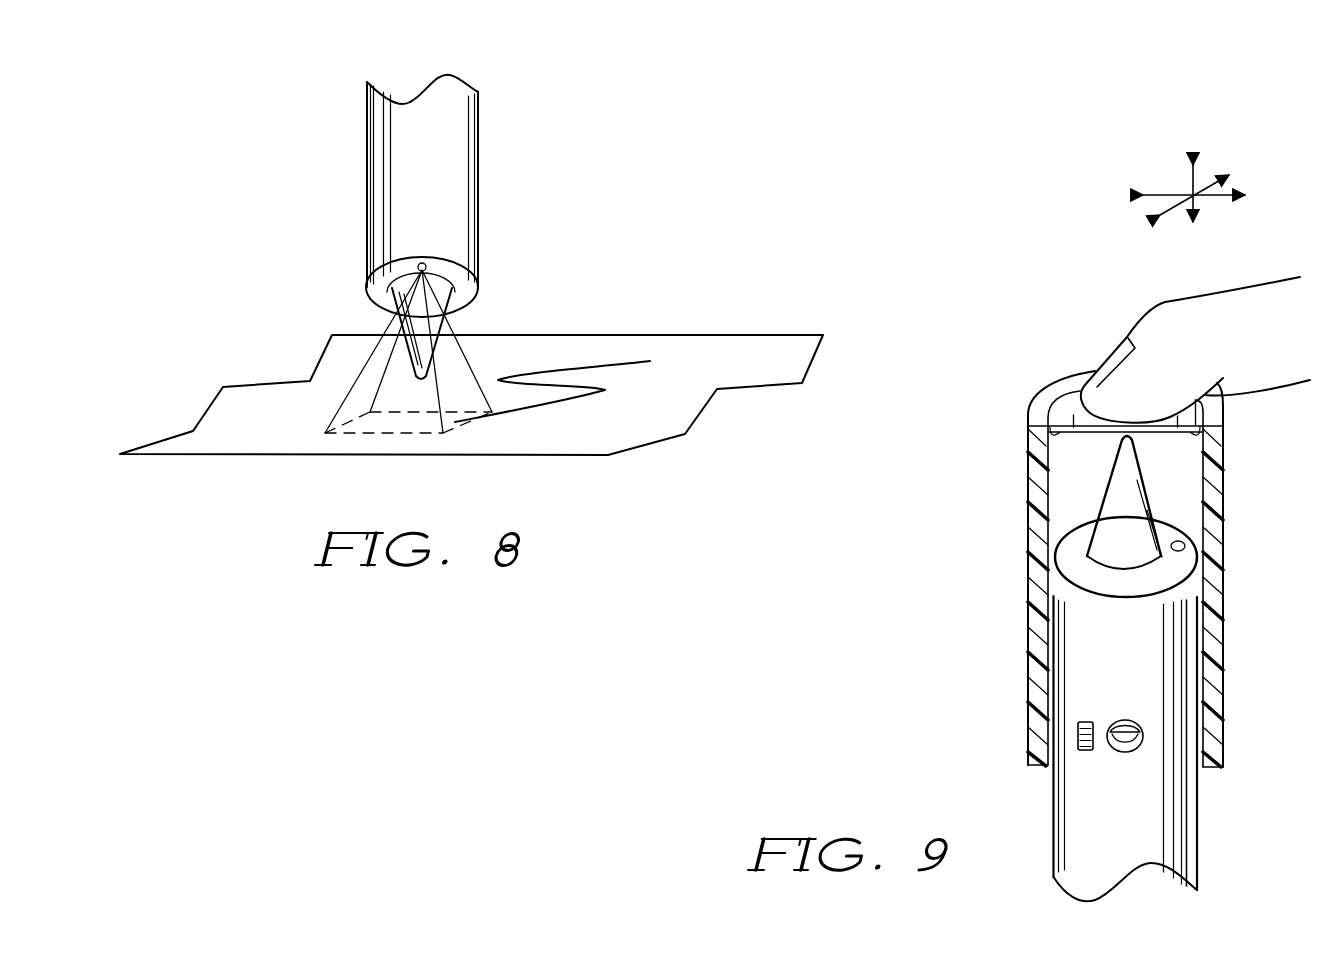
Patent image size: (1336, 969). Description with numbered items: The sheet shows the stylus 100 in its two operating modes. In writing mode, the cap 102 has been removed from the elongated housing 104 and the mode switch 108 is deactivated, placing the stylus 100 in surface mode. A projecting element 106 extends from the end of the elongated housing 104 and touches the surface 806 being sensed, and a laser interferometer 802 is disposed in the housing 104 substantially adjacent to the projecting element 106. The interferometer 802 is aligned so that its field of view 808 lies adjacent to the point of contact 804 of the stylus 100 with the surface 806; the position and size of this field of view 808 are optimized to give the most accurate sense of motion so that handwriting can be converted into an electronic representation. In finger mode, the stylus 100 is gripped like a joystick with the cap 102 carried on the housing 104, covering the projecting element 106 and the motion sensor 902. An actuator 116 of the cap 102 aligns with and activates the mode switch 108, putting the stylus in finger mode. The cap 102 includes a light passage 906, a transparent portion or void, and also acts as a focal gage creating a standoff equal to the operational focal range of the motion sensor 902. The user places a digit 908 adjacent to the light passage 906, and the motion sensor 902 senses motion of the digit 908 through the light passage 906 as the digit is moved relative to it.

In FIG. 8, the stylus 100 is at (587, 88).
In FIG. 9, the cap 102 is at (1226, 570).
In FIG. 9, the elongated housing 104 is at (1187, 850).
In FIG. 8, the projecting element 106 is at (425, 350).
In FIG. 9, the projecting element 106 is at (1115, 497).
In FIG. 9, the mode switch 108 is at (1123, 744).
In FIG. 9, the actuator 116 is at (1088, 722).
In FIG. 8, the laser interferometer 802 is at (422, 262).
In FIG. 8, the point of contact 804 is at (410, 383).
In FIG. 8, the surface 806 is at (667, 343).
In FIG. 8, the field of view 808 is at (390, 425).
In FIG. 9, the motion sensor 902 is at (1183, 541).
In FIG. 9, the light passage 906 is at (1163, 432).
In FIG. 9, the digit 908 is at (1153, 322).